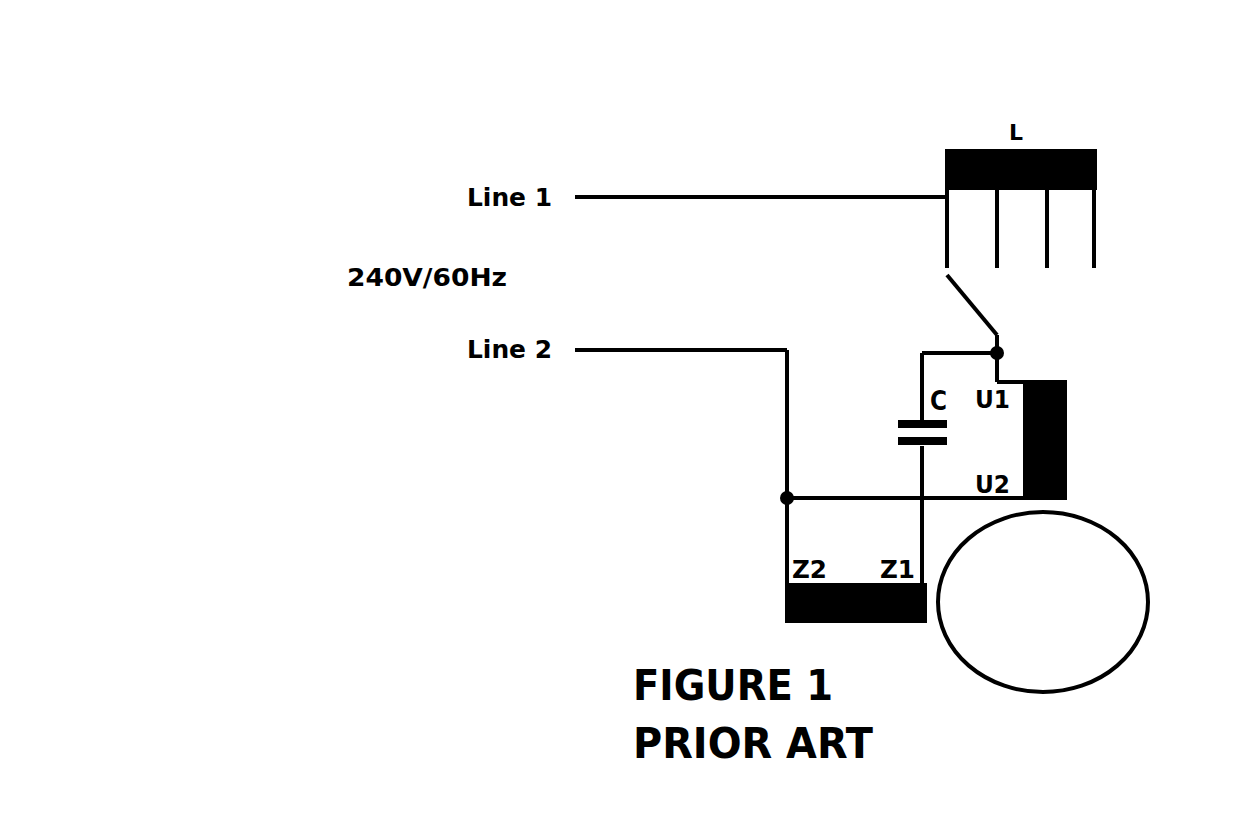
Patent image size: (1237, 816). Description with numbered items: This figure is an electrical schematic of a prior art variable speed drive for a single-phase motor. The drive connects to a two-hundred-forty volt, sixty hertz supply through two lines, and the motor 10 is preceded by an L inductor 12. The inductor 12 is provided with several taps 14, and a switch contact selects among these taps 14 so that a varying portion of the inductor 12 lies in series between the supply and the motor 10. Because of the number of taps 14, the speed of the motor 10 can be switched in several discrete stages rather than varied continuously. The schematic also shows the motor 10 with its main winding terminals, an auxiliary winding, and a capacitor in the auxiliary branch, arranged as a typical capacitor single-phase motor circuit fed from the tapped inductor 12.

The motor 10 is at (1084, 604).
The L inductor 12 is at (972, 130).
The taps 14 is at (1076, 276).